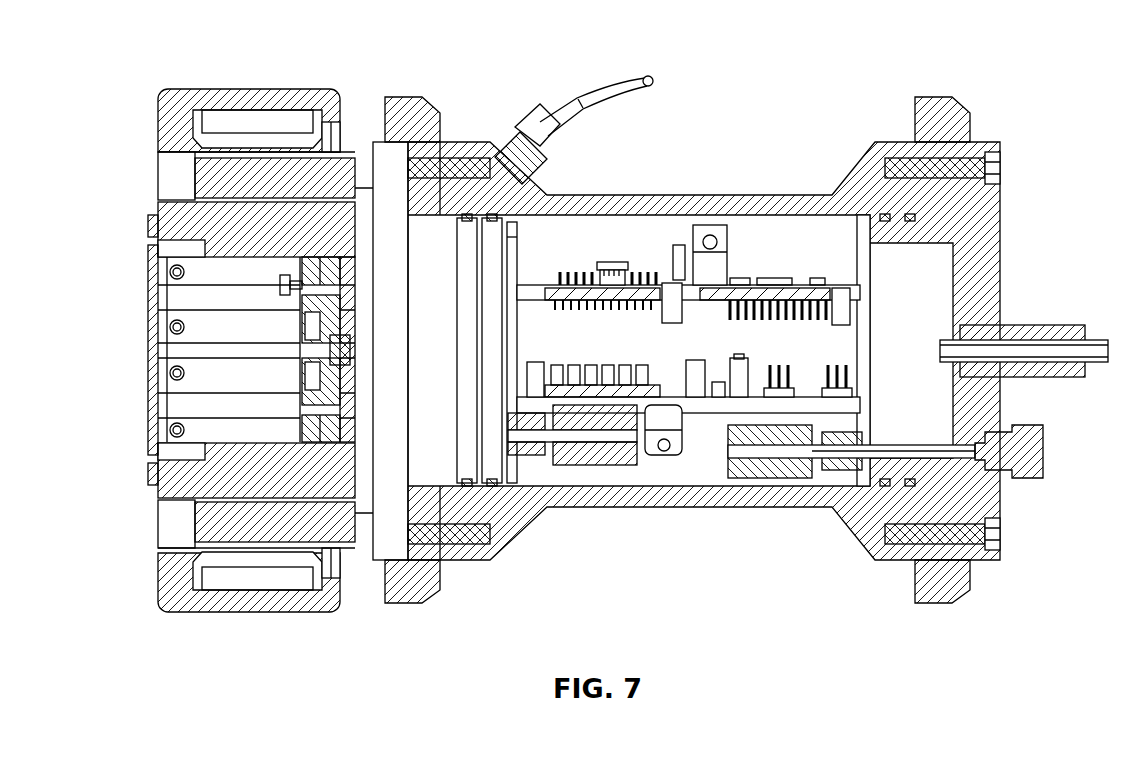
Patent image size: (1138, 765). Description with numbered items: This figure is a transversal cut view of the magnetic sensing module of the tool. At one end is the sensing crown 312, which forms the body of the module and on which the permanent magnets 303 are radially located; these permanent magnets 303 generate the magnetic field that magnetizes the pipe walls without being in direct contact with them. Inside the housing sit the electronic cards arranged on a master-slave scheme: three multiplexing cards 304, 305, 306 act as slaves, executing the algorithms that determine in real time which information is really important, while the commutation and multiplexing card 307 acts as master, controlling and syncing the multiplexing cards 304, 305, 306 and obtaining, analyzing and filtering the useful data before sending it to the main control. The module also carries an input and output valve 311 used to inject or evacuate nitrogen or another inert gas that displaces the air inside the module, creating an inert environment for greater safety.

The permanent magnets 303 is at (200, 172).
The multiplexing card 304 is at (605, 262).
The multiplexing card 305 is at (776, 280).
The multiplexing card 306 is at (598, 450).
The commutation and multiplexing card 307 is at (870, 392).
The input and output valve 311 is at (1040, 450).
The sensing crown 312 is at (253, 89).